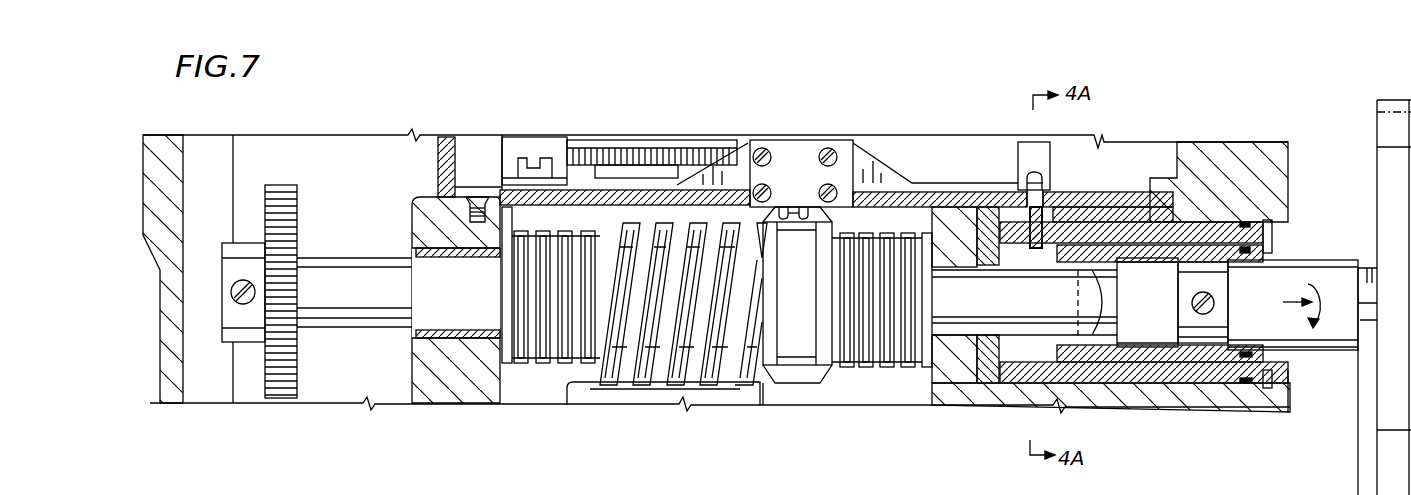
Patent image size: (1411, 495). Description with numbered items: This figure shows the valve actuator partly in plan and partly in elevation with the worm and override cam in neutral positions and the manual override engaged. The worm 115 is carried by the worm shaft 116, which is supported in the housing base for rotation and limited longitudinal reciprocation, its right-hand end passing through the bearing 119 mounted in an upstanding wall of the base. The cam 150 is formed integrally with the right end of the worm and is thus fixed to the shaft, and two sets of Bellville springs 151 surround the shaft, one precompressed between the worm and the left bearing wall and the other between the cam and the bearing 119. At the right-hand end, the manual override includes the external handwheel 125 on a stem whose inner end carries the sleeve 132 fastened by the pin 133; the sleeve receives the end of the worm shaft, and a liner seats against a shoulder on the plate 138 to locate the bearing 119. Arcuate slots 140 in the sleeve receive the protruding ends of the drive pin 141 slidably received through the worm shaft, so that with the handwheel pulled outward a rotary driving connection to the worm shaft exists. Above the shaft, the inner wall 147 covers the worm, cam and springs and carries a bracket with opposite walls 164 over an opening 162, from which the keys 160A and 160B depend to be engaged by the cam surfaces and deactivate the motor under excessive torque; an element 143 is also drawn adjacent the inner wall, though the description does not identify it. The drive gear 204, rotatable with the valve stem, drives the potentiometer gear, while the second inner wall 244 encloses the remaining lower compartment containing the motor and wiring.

The worm 115 is at (677, 390).
The worm shaft 116 is at (357, 330).
The bearing 119 is at (958, 225).
The handwheel 125 is at (1397, 102).
The sleeve 132 is at (1222, 222).
The pin 133 is at (1214, 302).
The plate 138 is at (985, 385).
The arcuate slots 140 is at (1118, 268).
The pin 141 is at (1105, 368).
The screw 143 is at (1060, 142).
The inner wall 147 is at (1119, 198).
The cam 150 is at (800, 382).
The Bellville springs 151 is at (888, 238).
The key 160A is at (785, 207).
The key 160B is at (820, 207).
The opening 162 is at (757, 188).
The opposite walls 164 is at (804, 207).
The drive gear 204 is at (645, 147).
The second inner wall 244 is at (457, 150).